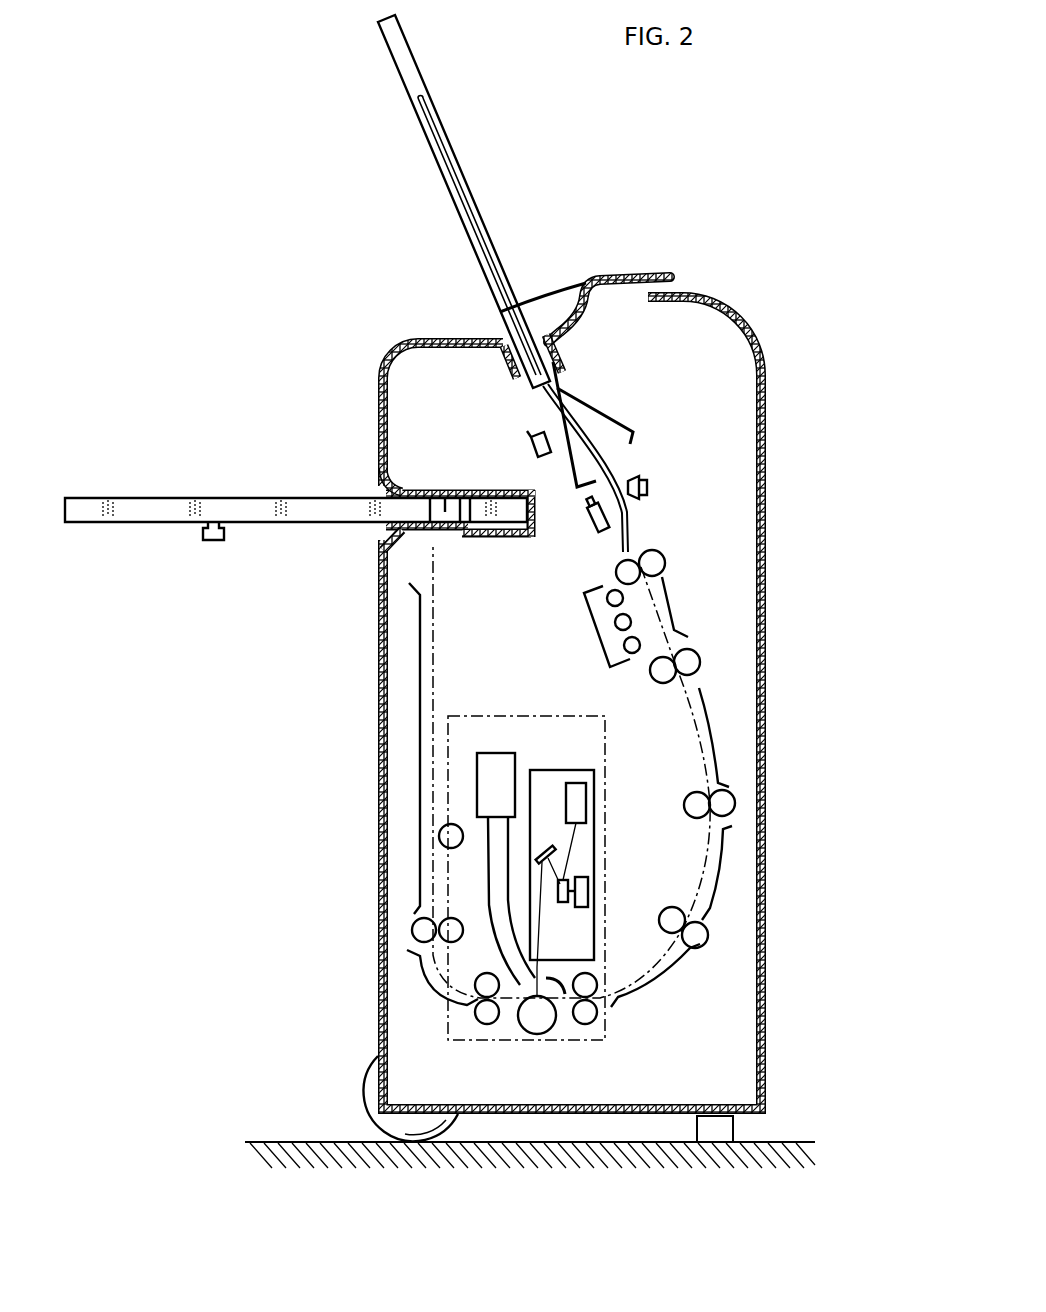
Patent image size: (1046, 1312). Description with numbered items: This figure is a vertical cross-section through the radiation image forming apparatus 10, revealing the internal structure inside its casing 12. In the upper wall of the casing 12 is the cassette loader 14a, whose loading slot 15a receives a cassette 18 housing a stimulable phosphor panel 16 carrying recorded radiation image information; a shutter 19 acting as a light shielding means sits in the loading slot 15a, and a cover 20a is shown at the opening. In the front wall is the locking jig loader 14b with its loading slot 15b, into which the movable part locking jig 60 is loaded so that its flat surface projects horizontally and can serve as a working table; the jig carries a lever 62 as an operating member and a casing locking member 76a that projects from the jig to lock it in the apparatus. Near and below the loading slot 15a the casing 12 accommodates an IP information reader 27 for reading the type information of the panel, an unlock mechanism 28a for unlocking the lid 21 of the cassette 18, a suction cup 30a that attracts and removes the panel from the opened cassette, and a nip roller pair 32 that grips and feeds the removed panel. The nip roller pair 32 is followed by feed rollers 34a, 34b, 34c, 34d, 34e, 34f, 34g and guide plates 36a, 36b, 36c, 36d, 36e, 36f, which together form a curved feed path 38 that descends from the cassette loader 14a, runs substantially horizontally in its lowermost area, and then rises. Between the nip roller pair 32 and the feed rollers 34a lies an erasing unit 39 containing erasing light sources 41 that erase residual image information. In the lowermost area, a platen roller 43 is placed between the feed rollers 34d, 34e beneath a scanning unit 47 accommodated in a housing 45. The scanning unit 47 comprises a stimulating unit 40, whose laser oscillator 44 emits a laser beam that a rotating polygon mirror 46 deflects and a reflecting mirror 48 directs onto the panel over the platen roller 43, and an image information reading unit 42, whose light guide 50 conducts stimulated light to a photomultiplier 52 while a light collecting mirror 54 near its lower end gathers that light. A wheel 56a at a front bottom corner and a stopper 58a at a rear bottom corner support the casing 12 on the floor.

The radiation image forming apparatus 10 is at (717, 131).
The casing 12 is at (766, 414).
The cassette loader 14a is at (507, 368).
The locking jig loader 14b is at (362, 528).
The loading slot 15a is at (547, 312).
The loading slot 15b is at (375, 493).
The stimulable phosphor panel 16 is at (445, 147).
The cassette 18 is at (464, 201).
The shutter 19 is at (558, 350).
The cover 20a is at (562, 268).
The lid 21 is at (606, 415).
The IP information reader 27 is at (527, 448).
The unlock mechanism 28a is at (603, 531).
The suction cup 30a is at (647, 490).
The nip roller pair 32 is at (657, 563).
The feed roller 34a is at (692, 660).
The feed roller 34b is at (697, 805).
The feed roller 34c is at (698, 938).
The feed roller 34d is at (586, 1020).
The feed roller 34e is at (489, 1021).
The feed roller 34f is at (423, 931).
The feed roller 34g is at (440, 836).
The guide plate 36a is at (672, 603).
The guide plate 36b is at (708, 740).
The guide plate 36c is at (707, 898).
The guide plate 36d is at (652, 972).
The guide plate 36e is at (432, 987).
The guide plate 36f is at (418, 678).
The curved feed path 38 is at (571, 796).
The erasing unit 39 is at (584, 627).
The stimulating unit 40 is at (594, 866).
The erasing light sources 41 is at (620, 626).
The image information reading unit 42 is at (507, 851).
The platen roller 43 is at (538, 1030).
The laser oscillator 44 is at (576, 790).
The housing 45 is at (553, 875).
The rotating polygon mirror 46 is at (590, 892).
The scanning unit 47 is at (585, 742).
The reflecting mirror 48 is at (544, 848).
The light guide 50 is at (492, 892).
The photomultiplier 52 is at (488, 765).
The light collecting mirror 54 is at (555, 976).
The wheel 56a is at (365, 1086).
The stopper 58a is at (698, 1130).
The movable part locking jig 60 is at (296, 506).
The lever 62 is at (213, 546).
The casing locking member 76a is at (440, 497).